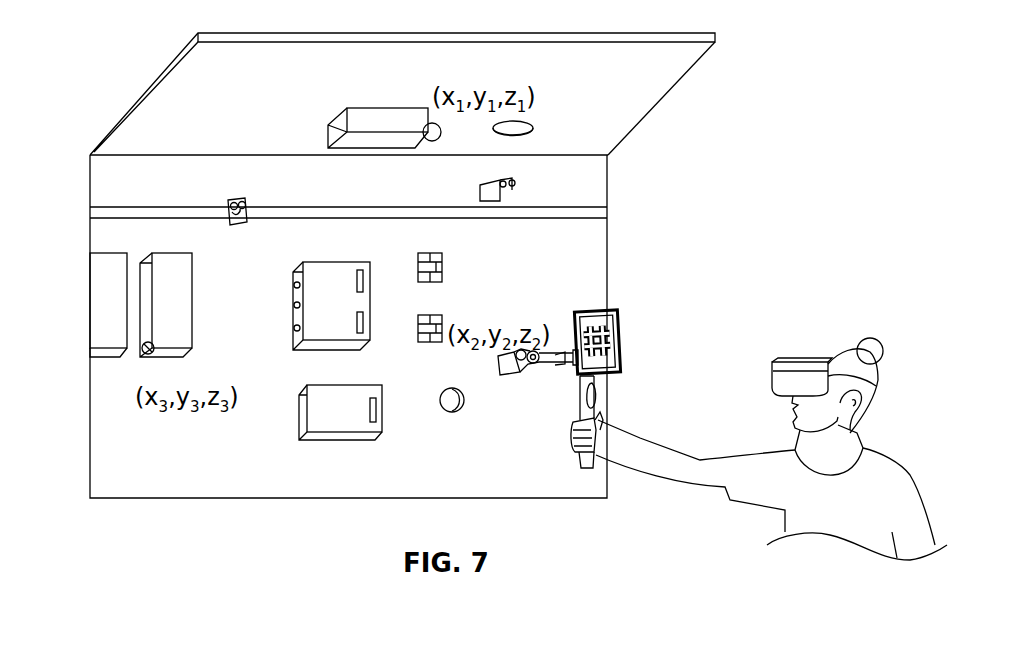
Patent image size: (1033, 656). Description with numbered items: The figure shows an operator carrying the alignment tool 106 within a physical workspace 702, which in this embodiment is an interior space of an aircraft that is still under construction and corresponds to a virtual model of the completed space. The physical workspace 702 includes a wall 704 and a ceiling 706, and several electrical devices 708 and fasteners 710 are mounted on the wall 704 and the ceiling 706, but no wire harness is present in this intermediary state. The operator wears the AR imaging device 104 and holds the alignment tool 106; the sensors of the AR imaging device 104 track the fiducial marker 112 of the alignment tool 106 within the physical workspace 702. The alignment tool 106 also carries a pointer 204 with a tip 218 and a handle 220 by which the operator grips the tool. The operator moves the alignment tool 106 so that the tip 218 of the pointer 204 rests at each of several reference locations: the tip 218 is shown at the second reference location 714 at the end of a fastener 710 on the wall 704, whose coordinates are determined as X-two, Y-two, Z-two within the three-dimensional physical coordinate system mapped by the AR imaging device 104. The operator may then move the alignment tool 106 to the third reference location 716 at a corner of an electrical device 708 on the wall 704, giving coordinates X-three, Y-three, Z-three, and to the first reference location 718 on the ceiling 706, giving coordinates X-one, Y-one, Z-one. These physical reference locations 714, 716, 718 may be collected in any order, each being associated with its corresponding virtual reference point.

The AR imaging device 104 is at (812, 357).
The alignment tool 106 is at (615, 308).
The fiducial marker 112 is at (613, 336).
The pointer 204 is at (556, 368).
The tip 218 is at (540, 367).
The handle 220 is at (597, 398).
The physical workspace 702 is at (176, 120).
The wall 704 is at (615, 222).
The ceiling 706 is at (649, 88).
The electrical device 708 is at (168, 305).
The fastener 710 is at (223, 207).
The second reference location 714 is at (531, 367).
The third reference location 716 is at (143, 352).
The first reference location 718 is at (428, 128).